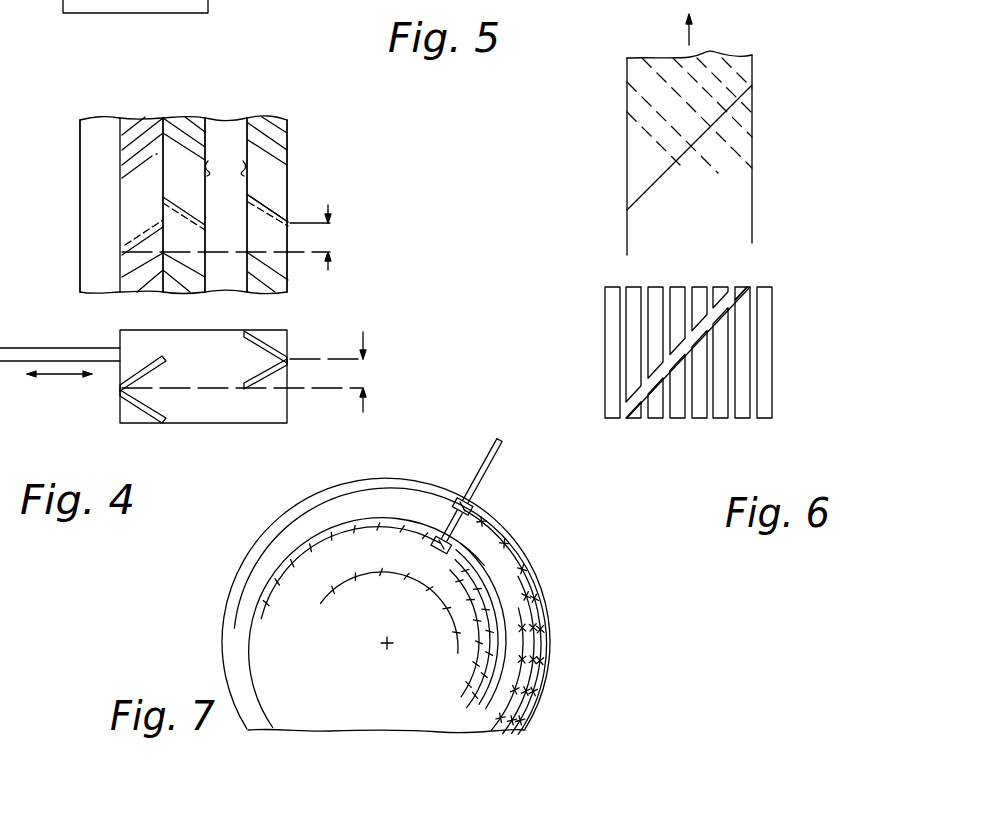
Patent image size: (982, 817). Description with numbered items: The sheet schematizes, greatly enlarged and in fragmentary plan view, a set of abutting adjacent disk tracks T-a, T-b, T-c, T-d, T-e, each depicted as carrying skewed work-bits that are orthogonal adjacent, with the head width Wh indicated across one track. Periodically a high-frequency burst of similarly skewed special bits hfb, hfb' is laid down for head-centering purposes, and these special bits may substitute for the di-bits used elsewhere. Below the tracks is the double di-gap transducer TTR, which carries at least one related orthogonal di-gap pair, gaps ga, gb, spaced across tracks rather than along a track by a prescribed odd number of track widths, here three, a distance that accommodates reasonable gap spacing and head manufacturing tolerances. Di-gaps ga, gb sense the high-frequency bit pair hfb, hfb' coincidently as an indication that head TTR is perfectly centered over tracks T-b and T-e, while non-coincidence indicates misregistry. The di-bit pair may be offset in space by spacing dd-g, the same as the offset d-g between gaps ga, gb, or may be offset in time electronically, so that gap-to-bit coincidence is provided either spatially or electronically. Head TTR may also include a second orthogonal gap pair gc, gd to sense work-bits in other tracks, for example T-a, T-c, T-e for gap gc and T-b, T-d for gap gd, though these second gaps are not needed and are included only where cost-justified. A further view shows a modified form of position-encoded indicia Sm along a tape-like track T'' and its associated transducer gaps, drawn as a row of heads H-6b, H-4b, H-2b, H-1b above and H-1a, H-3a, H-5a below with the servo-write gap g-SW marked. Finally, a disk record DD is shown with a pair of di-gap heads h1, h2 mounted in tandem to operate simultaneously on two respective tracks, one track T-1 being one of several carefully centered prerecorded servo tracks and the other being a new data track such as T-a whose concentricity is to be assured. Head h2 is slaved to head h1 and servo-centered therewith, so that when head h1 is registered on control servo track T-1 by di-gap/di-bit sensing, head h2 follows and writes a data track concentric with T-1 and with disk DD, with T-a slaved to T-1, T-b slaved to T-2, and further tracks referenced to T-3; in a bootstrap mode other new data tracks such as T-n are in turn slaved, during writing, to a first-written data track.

In FIG. 4, the disk track T-a is at (102, 118).
In FIG. 7, the disk track T-a is at (266, 618).
In FIG. 4, the disk track T-b is at (142, 118).
In FIG. 7, the disk track T-b is at (482, 690).
In FIG. 4, the disk track T-c is at (178, 118).
In FIG. 7, the disk track T-c is at (476, 663).
In FIG. 4, the disk track T-d is at (225, 118).
In FIG. 4, the disk track T-e is at (266, 118).
In FIG. 4, the head width Wh is at (225, 158).
In FIG. 4, the high-frequency special bit hfb is at (153, 225).
In FIG. 4, the high-frequency special bit hfb' is at (293, 195).
In FIG. 4, the di-bit offset spacing dd-g is at (249, 237).
In FIG. 4, the di-gap gb is at (145, 355).
In FIG. 4, the di-gap ga is at (287, 342).
In FIG. 4, the second orthogonal gap gc is at (133, 403).
In FIG. 4, the second orthogonal gap gd is at (268, 378).
In FIG. 4, the gap offset spacing d-g is at (261, 372).
In FIG. 4, the double di-gap transducer TTR is at (213, 435).
In FIG. 6, the tape T'' is at (710, 134).
In FIG. 6, the servo mark Sm is at (640, 188).
In FIG. 6, the head 6b H-6b is at (634, 286).
In FIG. 6, the head 4b H-4b is at (674, 286).
In FIG. 6, the head 2b H-2b is at (722, 286).
In FIG. 6, the head 1b H-1b is at (743, 285).
In FIG. 6, the servo-write gap g-SW is at (772, 271).
In FIG. 6, the head 1a H-1a is at (744, 419).
In FIG. 6, the head 3a H-3a is at (699, 419).
In FIG. 6, the head 5a H-5a is at (654, 419).
In FIG. 7, the di-gap head h1 is at (478, 508).
In FIG. 7, the di-gap head h2 is at (428, 544).
In FIG. 7, the disk record DD is at (541, 545).
In FIG. 7, the prerecorded servo track T-1 is at (545, 628).
In FIG. 7, the prerecorded servo track T-2 is at (543, 651).
In FIG. 7, the prerecorded servo track T-3 is at (542, 677).
In FIG. 7, the new data track T-n is at (323, 601).